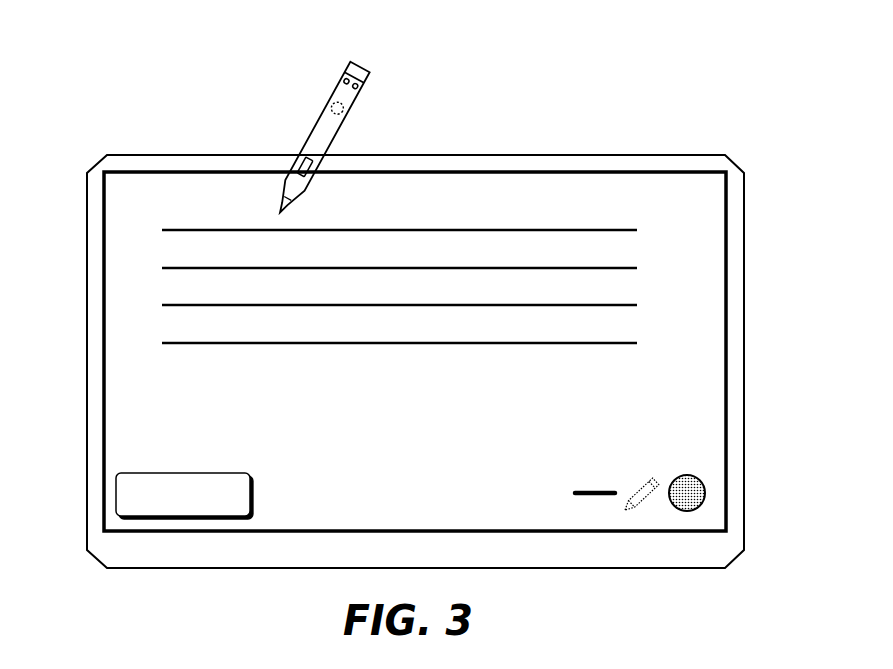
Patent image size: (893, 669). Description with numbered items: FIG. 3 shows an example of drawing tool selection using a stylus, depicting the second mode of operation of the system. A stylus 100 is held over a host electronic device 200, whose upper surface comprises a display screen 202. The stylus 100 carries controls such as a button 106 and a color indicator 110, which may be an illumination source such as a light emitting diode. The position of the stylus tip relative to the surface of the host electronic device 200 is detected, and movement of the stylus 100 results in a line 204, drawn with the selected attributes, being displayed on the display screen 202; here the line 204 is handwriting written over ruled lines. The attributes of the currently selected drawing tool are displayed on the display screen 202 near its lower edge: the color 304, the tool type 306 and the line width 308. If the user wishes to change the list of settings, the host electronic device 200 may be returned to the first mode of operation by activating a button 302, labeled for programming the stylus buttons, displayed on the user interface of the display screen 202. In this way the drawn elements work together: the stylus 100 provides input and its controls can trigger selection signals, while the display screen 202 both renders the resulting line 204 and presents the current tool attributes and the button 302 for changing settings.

The stylus 100 is at (337, 136).
The button 106 is at (343, 78).
The color indicator 110 is at (297, 158).
The host electronic device 200 is at (84, 293).
The display screen 202 is at (126, 193).
The line 204 is at (230, 193).
The button 302 is at (127, 492).
The color 304 is at (705, 493).
The tool type 306 is at (650, 493).
The line width 308 is at (587, 496).